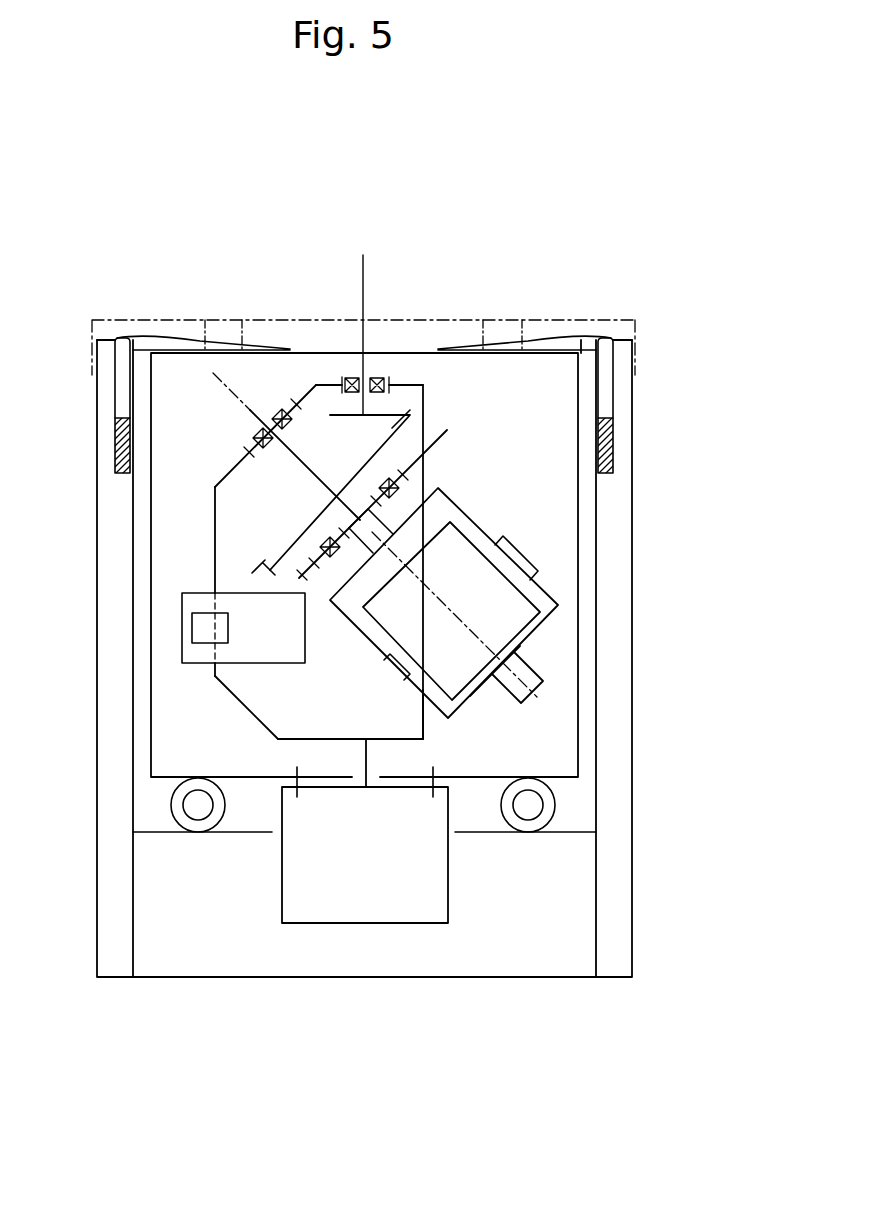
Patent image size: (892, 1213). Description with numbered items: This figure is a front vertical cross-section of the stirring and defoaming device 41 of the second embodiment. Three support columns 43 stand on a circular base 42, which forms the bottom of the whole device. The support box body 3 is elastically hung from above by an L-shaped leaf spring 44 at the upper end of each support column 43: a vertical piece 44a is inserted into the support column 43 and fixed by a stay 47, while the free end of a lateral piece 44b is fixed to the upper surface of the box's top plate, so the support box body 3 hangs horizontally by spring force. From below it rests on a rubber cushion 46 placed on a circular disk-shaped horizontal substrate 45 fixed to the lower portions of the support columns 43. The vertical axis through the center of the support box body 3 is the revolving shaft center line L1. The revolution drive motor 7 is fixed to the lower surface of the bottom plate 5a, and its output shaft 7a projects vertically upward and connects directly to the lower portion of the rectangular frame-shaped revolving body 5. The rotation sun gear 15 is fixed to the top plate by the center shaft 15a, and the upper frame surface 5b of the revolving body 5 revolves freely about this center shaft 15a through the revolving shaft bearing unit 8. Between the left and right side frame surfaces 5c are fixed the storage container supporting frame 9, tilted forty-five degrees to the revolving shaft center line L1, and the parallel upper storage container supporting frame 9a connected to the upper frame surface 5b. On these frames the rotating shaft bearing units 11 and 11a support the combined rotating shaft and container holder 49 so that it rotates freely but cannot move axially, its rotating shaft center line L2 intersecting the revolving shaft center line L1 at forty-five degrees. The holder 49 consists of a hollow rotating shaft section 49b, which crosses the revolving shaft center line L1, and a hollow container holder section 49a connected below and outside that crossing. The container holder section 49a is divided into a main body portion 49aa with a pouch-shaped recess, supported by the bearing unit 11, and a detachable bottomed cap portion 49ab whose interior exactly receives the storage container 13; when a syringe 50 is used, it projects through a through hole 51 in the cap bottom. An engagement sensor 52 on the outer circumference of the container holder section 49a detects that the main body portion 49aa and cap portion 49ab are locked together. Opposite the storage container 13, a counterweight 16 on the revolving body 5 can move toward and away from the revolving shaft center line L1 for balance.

The support box body 3 is at (150, 715).
The revolving body 5 is at (321, 567).
The bottom plate 5a is at (300, 740).
The upper frame surface 5b is at (412, 383).
The side frame surface 5c is at (245, 705).
The revolution drive motor 7 is at (282, 905).
The output shaft 7a is at (368, 760).
The revolving shaft bearing unit 8 is at (352, 376).
The storage container supporting frame 9 is at (405, 472).
The upper storage container supporting frame 9a is at (248, 450).
The rotating shaft bearing unit 11 is at (338, 562).
The rotating shaft bearing unit 11a is at (281, 408).
The storage container 13 is at (430, 712).
The rotation sun gear 15 is at (331, 416).
The center shaft 15a is at (378, 376).
The counterweight 16 is at (205, 613).
The stirring and defoaming device 41 is at (607, 238).
The circular base 42 is at (540, 977).
The support column 43 is at (115, 600).
The L-shaped leaf spring 44 is at (105, 394).
The vertical piece 44a is at (122, 408).
The lateral piece 44b is at (195, 337).
The horizontal substrate 45 is at (158, 832).
The rubber cushion 46 is at (196, 833).
The stay 47 is at (122, 445).
The combined rotating shaft and container holder 49 is at (435, 593).
The container holder section 49a is at (500, 503).
The main body portion 49aa is at (355, 626).
The cap portion 49ab is at (402, 680).
The rotating shaft section 49b is at (307, 468).
The syringe 50 is at (532, 700).
The through hole 51 is at (493, 672).
The engagement sensor 52 is at (527, 549).
The revolving shaft center line L1 is at (376, 262).
The rotating shaft center line L2 is at (220, 385).